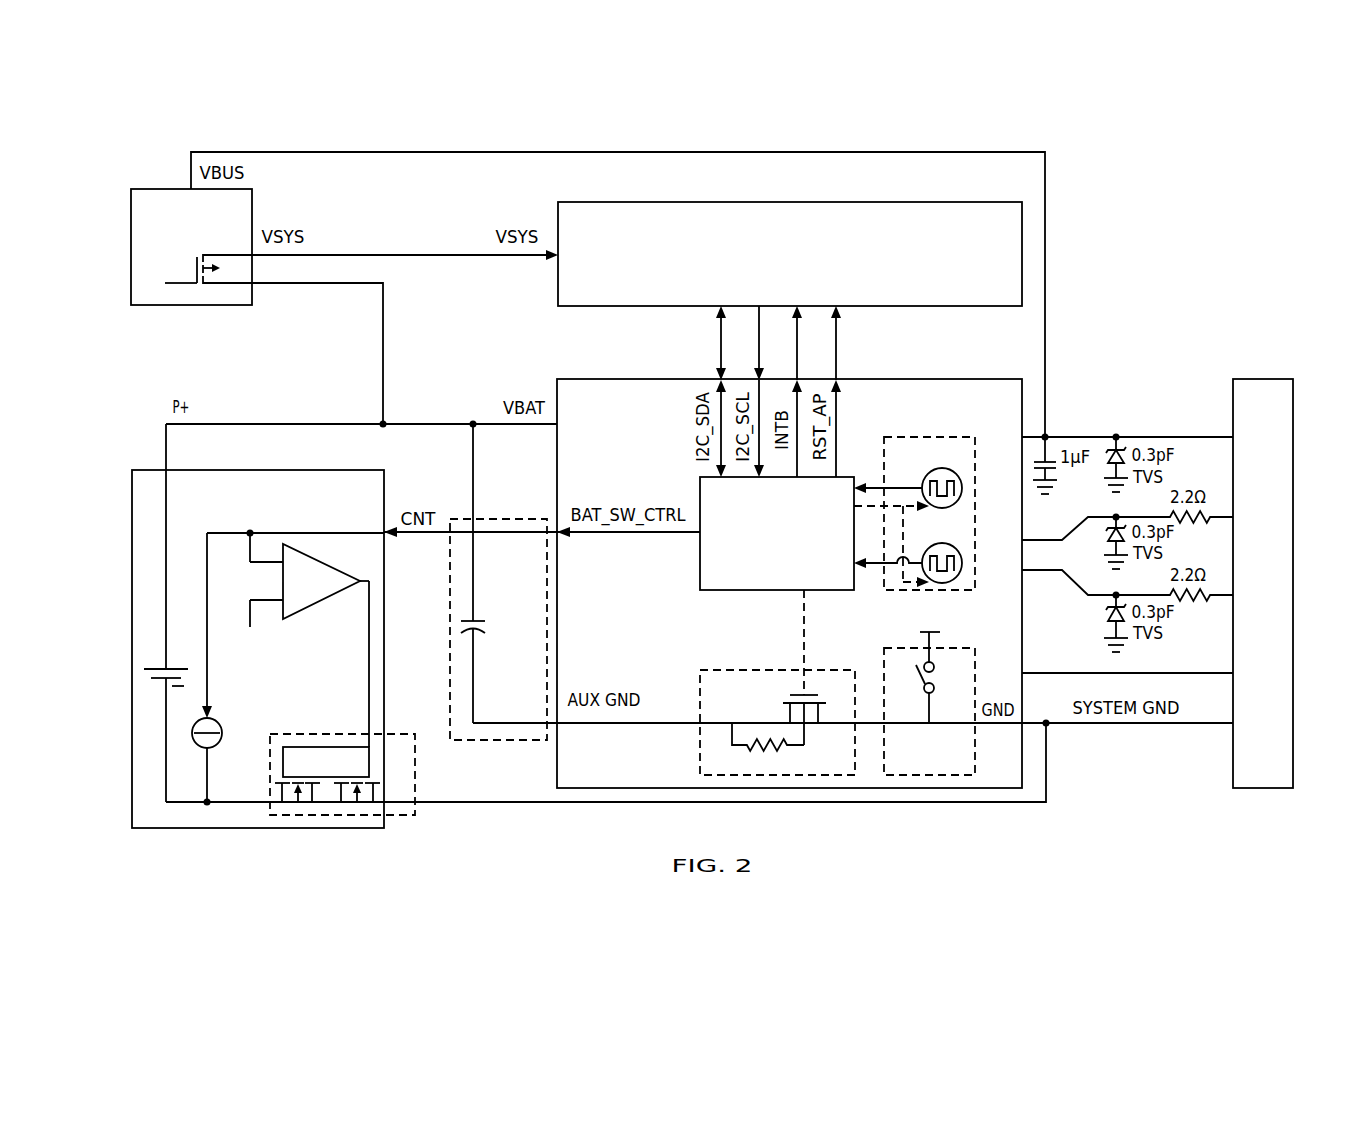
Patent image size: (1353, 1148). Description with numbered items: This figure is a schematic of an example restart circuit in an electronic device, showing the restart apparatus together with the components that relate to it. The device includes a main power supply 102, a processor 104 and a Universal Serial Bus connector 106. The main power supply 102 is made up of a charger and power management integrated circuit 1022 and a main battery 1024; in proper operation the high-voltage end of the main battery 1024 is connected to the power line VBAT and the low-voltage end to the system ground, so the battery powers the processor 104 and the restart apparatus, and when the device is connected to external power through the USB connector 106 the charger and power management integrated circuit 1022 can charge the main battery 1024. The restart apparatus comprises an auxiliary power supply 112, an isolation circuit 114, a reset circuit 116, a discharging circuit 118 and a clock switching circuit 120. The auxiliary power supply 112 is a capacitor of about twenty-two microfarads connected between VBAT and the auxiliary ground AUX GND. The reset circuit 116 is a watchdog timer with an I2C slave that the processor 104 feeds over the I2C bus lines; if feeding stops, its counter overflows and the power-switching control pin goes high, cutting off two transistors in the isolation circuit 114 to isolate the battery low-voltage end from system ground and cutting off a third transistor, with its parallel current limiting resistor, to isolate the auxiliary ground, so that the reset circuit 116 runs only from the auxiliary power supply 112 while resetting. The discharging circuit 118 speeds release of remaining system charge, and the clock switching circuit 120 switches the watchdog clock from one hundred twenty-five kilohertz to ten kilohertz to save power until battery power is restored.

The main power supply 102 is at (139, 322).
The charger and power management integrated circuit 1022 is at (131, 250).
The main battery 1024 is at (257, 470).
The processor 104 is at (792, 202).
The Universal Serial Bus (USB) connector 106 is at (1293, 590).
The auxiliary power supply 112 is at (450, 631).
The isolation circuit 114 is at (415, 770).
The reset circuit 116 is at (777, 590).
The discharging circuit 118 is at (960, 648).
The clock switching circuit 120 is at (928, 437).